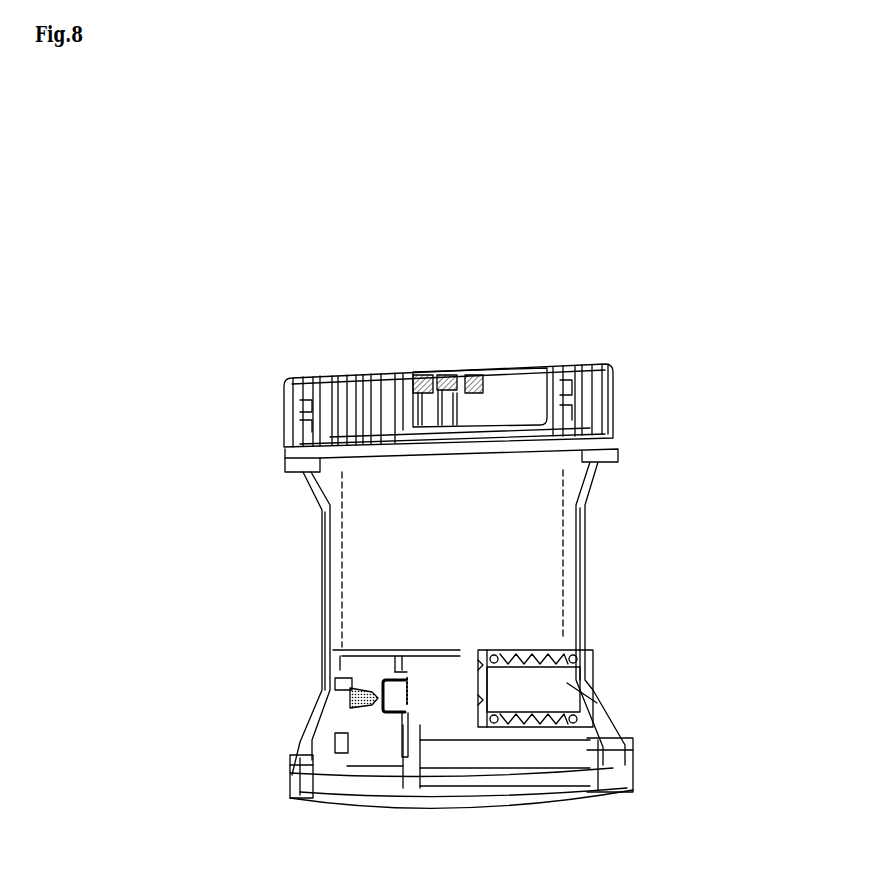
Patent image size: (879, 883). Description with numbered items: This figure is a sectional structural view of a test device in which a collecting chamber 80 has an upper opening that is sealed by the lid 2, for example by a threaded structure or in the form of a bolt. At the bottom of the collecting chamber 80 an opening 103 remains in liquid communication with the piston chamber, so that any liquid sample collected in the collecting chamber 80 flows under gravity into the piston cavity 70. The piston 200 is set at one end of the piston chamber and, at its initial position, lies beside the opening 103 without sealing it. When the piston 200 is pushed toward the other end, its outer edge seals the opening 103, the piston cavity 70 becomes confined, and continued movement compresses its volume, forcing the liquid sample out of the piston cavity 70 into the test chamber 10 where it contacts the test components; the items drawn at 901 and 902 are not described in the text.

The lid 2 is at (390, 413).
The test chamber 10 is at (387, 757).
The piston cavity 70 is at (453, 681).
The collecting chamber 80 is at (495, 577).
The opening 103 is at (467, 657).
The piston 200 is at (523, 670).
The pin 901 is at (408, 692).
The engagement stub 902 is at (380, 700).